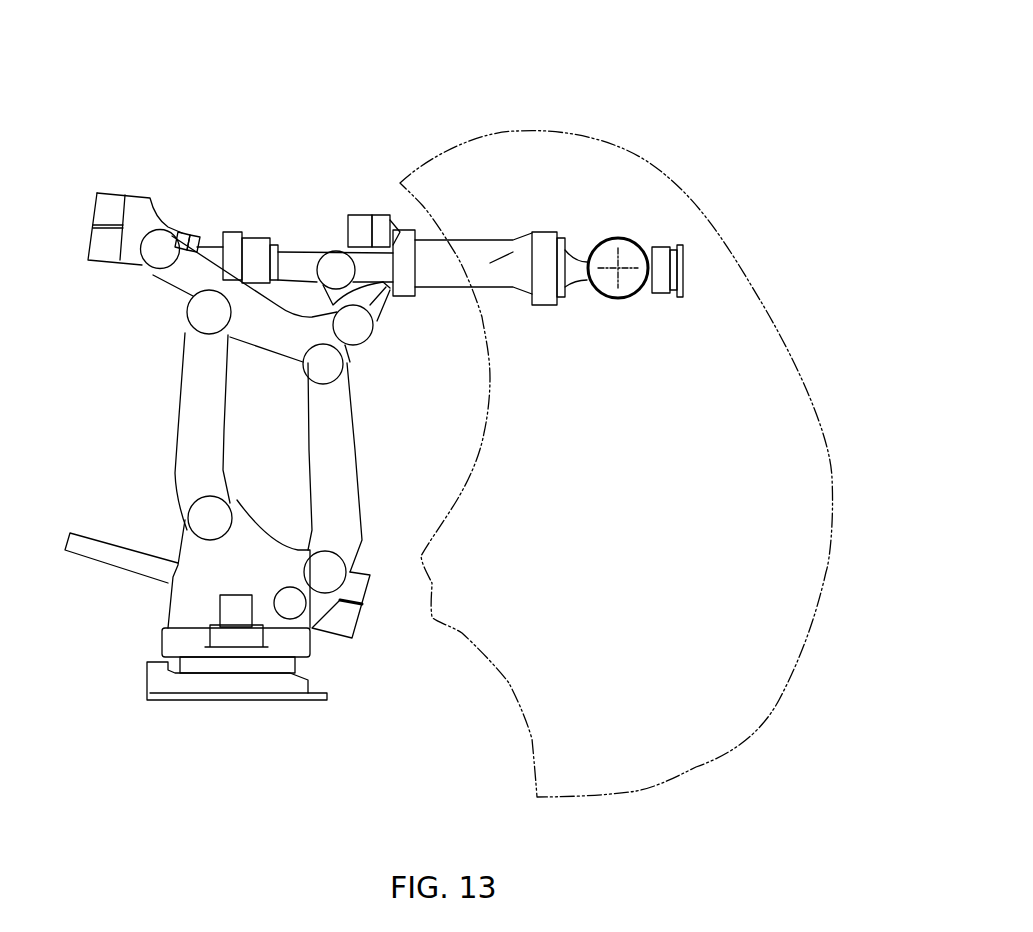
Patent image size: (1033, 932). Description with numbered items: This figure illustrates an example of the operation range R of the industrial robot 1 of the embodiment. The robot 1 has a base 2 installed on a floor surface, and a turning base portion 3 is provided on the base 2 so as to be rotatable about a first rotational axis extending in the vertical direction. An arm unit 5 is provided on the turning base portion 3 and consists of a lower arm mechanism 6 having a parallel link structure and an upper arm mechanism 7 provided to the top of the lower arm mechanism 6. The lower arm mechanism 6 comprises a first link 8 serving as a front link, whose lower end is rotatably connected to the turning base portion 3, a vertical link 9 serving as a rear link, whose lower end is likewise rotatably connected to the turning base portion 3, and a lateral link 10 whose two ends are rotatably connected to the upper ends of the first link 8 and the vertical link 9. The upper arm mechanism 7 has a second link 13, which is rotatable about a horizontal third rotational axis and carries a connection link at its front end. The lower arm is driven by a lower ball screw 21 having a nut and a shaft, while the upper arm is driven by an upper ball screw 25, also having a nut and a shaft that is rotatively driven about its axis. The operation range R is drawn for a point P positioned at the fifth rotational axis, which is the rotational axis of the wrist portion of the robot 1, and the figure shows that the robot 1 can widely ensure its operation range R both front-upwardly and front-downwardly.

The industrial robot 1 is at (170, 95).
The base 2 is at (313, 685).
The turning base portion 3 is at (305, 642).
The arm unit 5 is at (233, 353).
The lower arm mechanism 6 is at (233, 452).
The upper arm mechanism 7 is at (244, 240).
The first link 8 is at (348, 452).
The vertical link 9 is at (182, 408).
The lateral link 10 is at (257, 338).
The second link 13 is at (448, 283).
The lower ball screw 21 is at (108, 555).
The upper ball screw 25 is at (233, 189).
The operation range R is at (657, 172).
The point P is at (618, 270).